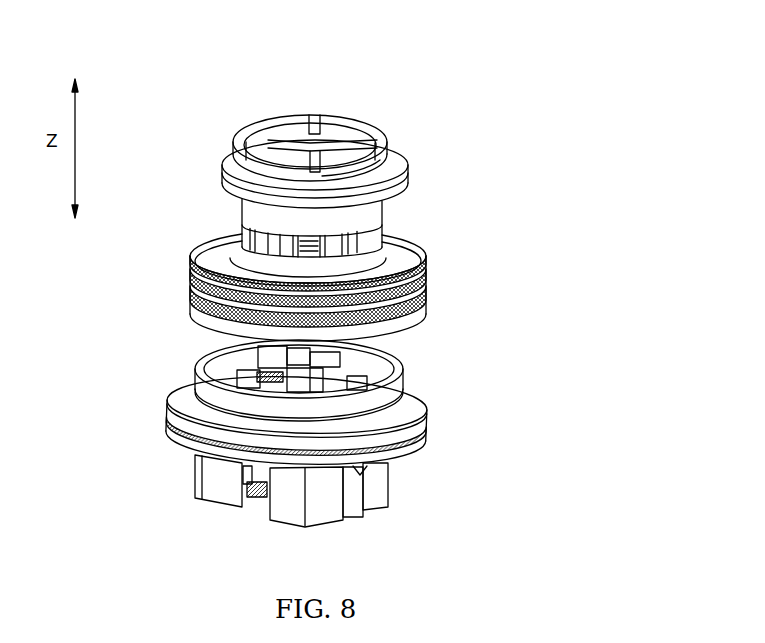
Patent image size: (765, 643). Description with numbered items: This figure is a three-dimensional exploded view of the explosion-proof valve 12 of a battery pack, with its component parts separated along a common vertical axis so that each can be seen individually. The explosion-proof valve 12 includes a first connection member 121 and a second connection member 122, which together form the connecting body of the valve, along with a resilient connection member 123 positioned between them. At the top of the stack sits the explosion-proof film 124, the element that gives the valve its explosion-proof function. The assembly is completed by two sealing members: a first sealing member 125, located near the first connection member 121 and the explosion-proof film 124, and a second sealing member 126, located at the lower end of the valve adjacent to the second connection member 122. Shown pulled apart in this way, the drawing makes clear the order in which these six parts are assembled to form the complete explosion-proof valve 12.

The explosion-proof valve 12 is at (472, 50).
The first connection member 121 is at (408, 223).
The second connection member 122 is at (410, 407).
The resilient connection member 123 is at (423, 307).
The explosion-proof film 124 is at (332, 118).
The first sealing member 125 is at (388, 176).
The second sealing member 126 is at (413, 455).